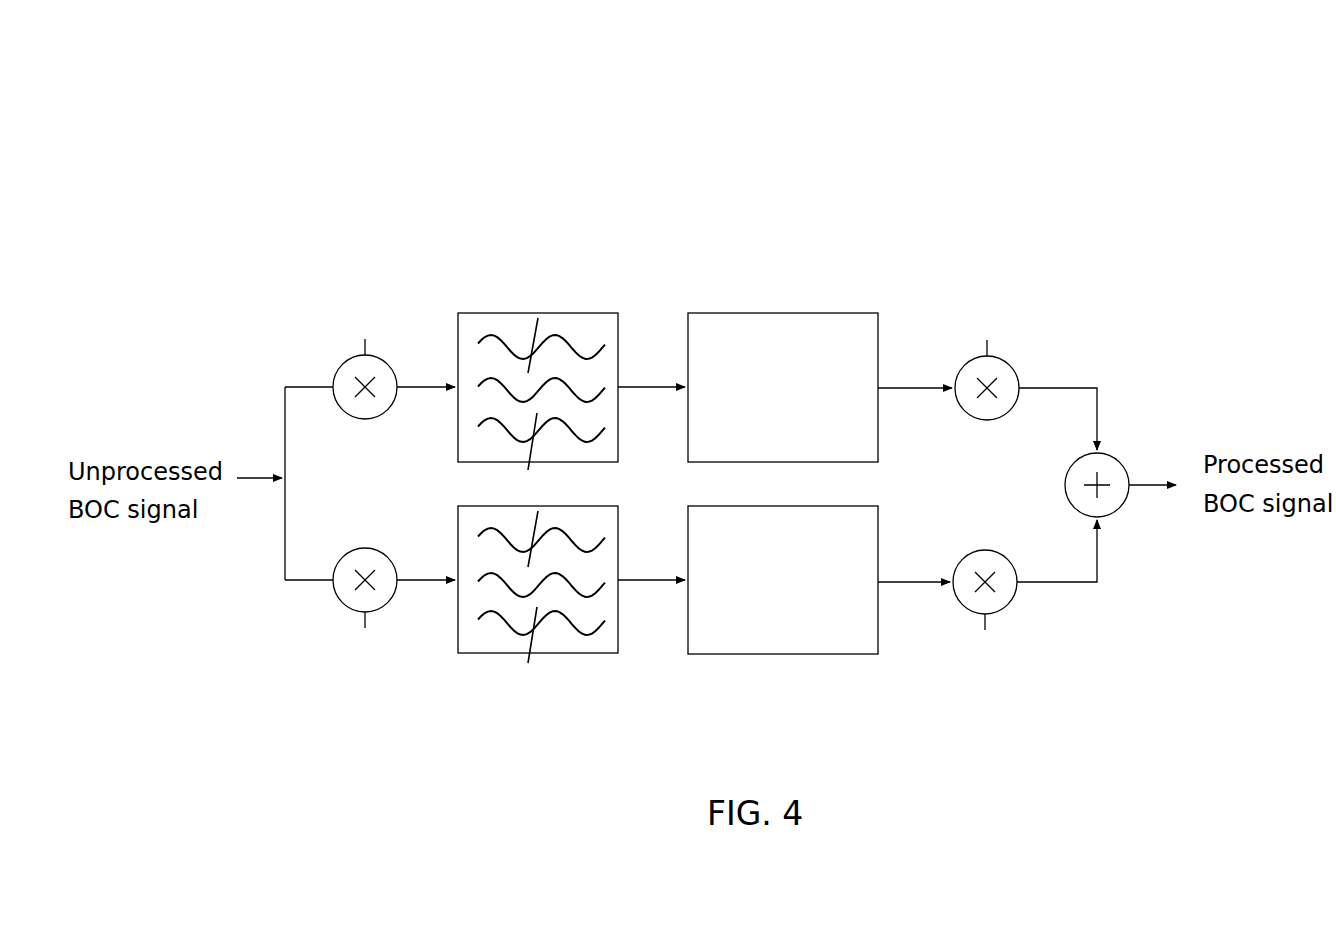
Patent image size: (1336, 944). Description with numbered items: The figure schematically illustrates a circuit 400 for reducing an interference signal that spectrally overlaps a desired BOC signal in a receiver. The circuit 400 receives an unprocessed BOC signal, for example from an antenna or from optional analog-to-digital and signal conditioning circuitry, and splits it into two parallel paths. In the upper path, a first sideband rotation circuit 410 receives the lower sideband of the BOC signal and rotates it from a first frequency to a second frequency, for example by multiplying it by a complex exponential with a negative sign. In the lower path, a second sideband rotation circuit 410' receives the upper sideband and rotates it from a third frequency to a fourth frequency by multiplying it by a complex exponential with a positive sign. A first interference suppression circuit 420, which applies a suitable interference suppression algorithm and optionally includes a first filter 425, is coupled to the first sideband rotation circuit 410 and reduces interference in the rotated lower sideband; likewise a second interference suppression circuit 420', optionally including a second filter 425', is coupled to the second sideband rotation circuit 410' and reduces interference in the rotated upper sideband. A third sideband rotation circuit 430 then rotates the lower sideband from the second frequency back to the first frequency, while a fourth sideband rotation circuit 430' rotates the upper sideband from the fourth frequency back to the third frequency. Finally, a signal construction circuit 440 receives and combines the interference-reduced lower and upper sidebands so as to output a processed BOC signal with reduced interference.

The circuit 400 is at (1162, 131).
The first sideband rotation circuit 410 is at (316, 347).
The second sideband rotation circuit 410' is at (313, 614).
The first filter 425 is at (559, 340).
The second filter 425' is at (555, 630).
The first interference suppression circuit 420 is at (794, 336).
The second interference suppression circuit 420' is at (814, 630).
The third sideband rotation circuit 430 is at (1019, 349).
The fourth sideband rotation circuit 430' is at (1023, 624).
The signal construction circuit 440 is at (1120, 468).